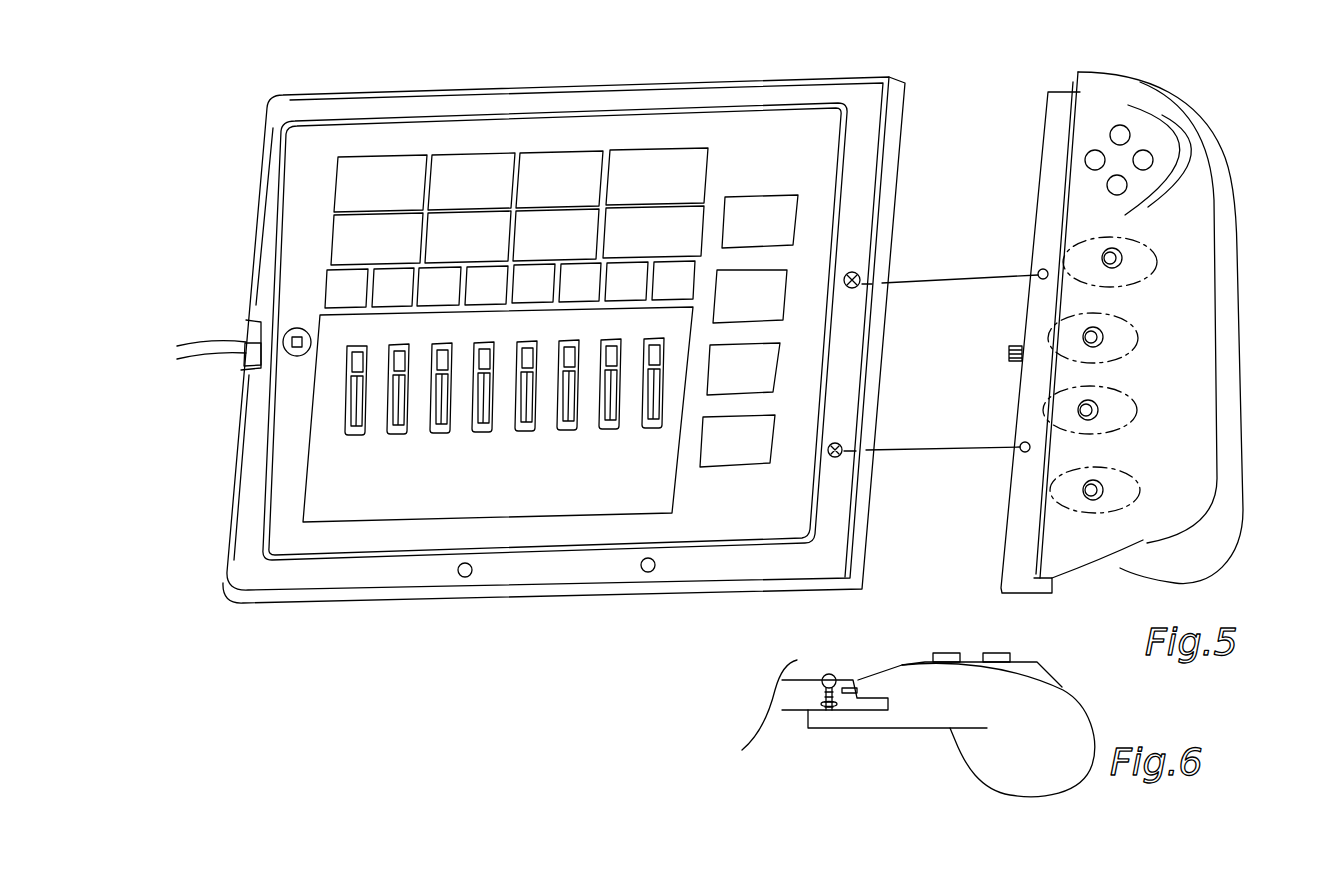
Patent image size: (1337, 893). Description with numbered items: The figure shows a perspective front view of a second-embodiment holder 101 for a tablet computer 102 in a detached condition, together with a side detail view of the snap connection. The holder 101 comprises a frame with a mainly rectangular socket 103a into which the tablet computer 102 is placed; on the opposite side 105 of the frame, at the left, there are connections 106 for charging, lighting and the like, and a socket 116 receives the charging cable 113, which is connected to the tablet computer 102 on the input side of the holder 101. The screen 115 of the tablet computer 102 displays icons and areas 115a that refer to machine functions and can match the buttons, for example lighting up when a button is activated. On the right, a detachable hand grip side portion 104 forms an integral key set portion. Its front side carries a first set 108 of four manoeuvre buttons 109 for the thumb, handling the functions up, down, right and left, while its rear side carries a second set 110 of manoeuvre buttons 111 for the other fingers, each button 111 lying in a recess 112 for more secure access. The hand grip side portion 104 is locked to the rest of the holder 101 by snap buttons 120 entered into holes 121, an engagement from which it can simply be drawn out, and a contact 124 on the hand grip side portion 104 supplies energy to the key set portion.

In FIG. 5, the holder 101 is at (400, 582).
In FIG. 5, the tablet computer 102 is at (723, 526).
In FIG. 5, the socket 103a is at (285, 567).
In FIG. 5, the hand grip side portion 104 is at (1200, 433).
In FIG. 5, the opposite side 105 is at (231, 453).
In FIG. 5, the connections 106 is at (249, 363).
In FIG. 5, the first set of manoeuvre buttons 108 is at (1154, 128).
In FIG. 5, the manoeuvre button 109 is at (1150, 155).
In FIG. 5, the second set of manoeuvre buttons 110 is at (1230, 277).
In FIG. 5, the manoeuvre button 111 is at (1097, 402).
In FIG. 5, the recess 112 is at (1140, 493).
In FIG. 5, the charging cable 113 is at (193, 340).
In FIG. 5, the screen 115 is at (673, 135).
In FIG. 5, the icons and areas 115a is at (551, 170).
In FIG. 5, the socket 116 is at (253, 323).
In FIG. 5, the snap buttons 120 is at (870, 272).
In FIG. 6, the snap buttons 120 is at (833, 676).
In FIG. 5, the holes 121 is at (1040, 282).
In FIG. 6, the holes 121 is at (828, 712).
In FIG. 5, the contact 124 is at (1010, 361).
In FIG. 6, the contact 124 is at (848, 700).